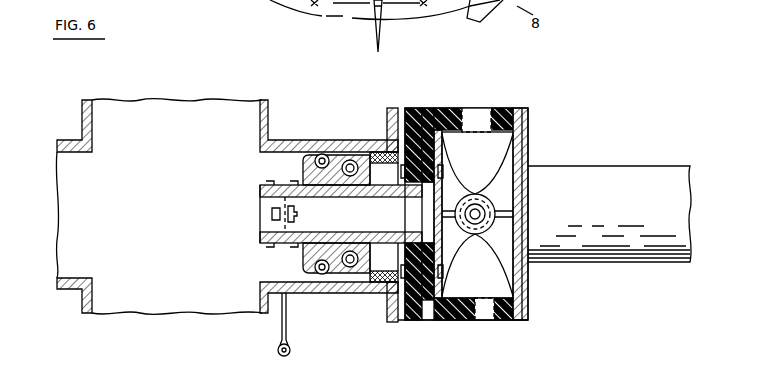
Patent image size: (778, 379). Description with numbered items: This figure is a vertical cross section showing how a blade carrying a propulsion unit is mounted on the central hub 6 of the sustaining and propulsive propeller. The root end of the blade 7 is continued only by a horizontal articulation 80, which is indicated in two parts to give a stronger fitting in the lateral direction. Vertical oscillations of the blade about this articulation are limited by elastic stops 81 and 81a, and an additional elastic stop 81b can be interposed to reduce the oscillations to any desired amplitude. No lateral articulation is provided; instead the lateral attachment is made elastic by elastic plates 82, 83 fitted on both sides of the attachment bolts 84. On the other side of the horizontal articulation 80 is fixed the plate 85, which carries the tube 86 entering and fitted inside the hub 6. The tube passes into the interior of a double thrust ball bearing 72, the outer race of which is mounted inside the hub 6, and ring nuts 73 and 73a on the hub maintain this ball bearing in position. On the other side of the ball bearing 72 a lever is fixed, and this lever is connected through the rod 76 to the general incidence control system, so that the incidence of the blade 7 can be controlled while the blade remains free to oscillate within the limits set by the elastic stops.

The central hub 6 is at (243, 108).
The blade 7 is at (612, 182).
The double thrust ball bearing 72 is at (312, 153).
The ring nut 73 is at (383, 141).
The ring nut 73a is at (378, 140).
The rod 76 is at (288, 327).
The horizontal articulation 80 is at (476, 214).
The elastic stop 81 is at (515, 108).
The elastic stop 81a is at (467, 106).
The additional elastic stop 81b is at (480, 133).
The elastic plate 82 is at (437, 108).
The elastic plate 83 is at (415, 108).
The attachment bolt 84 is at (405, 321).
The plate 85 is at (420, 118).
The tube 86 is at (262, 218).